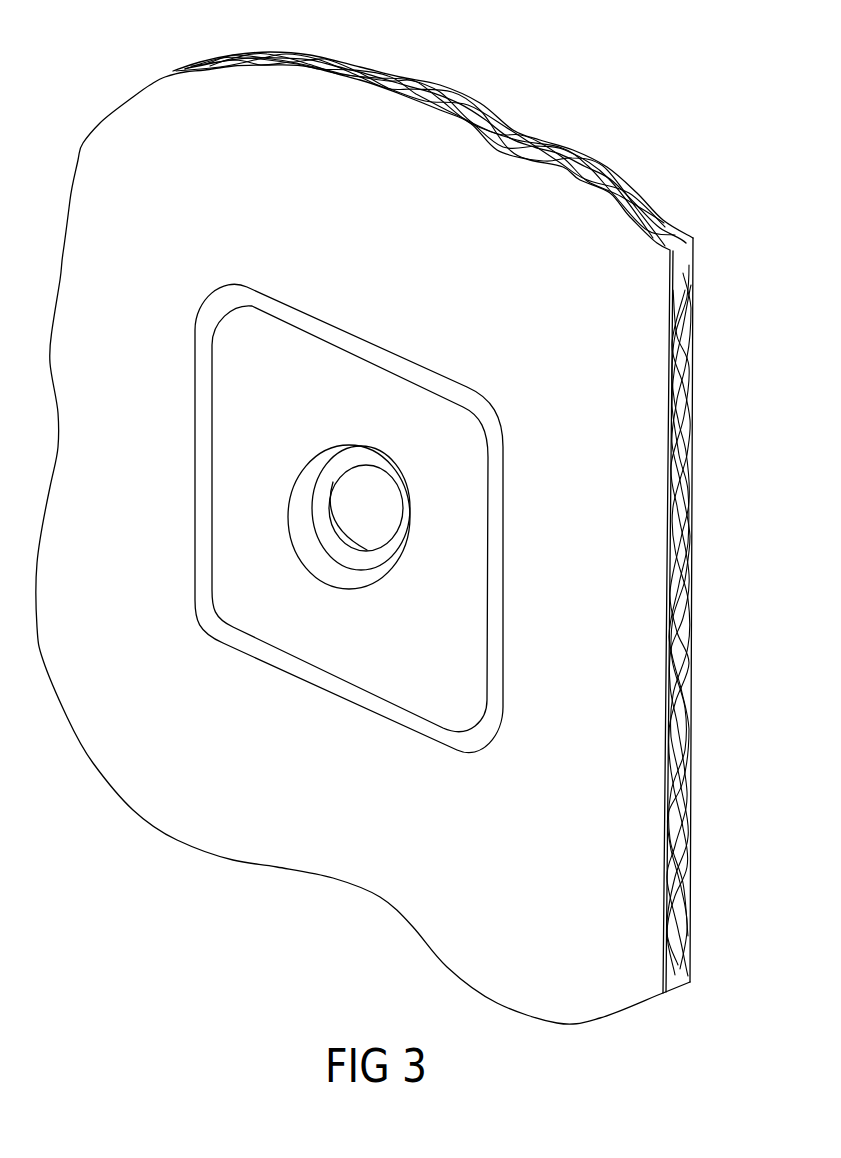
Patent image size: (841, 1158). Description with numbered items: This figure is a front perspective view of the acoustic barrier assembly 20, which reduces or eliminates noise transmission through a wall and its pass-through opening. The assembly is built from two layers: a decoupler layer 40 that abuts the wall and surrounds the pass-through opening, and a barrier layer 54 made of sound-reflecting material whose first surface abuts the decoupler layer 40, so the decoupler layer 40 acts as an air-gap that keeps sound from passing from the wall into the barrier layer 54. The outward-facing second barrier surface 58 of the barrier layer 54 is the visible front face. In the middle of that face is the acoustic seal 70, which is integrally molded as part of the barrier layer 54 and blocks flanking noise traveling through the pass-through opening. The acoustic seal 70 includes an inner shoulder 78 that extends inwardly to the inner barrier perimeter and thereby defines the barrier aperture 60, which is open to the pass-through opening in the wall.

The acoustic barrier assembly 20 is at (67, 78).
The decoupler layer 40 is at (678, 448).
The barrier layer 54 is at (665, 812).
The second barrier surface 58 is at (379, 840).
The barrier aperture 60 is at (351, 515).
The acoustic seal 70 is at (271, 617).
The inner shoulder 78 is at (318, 492).